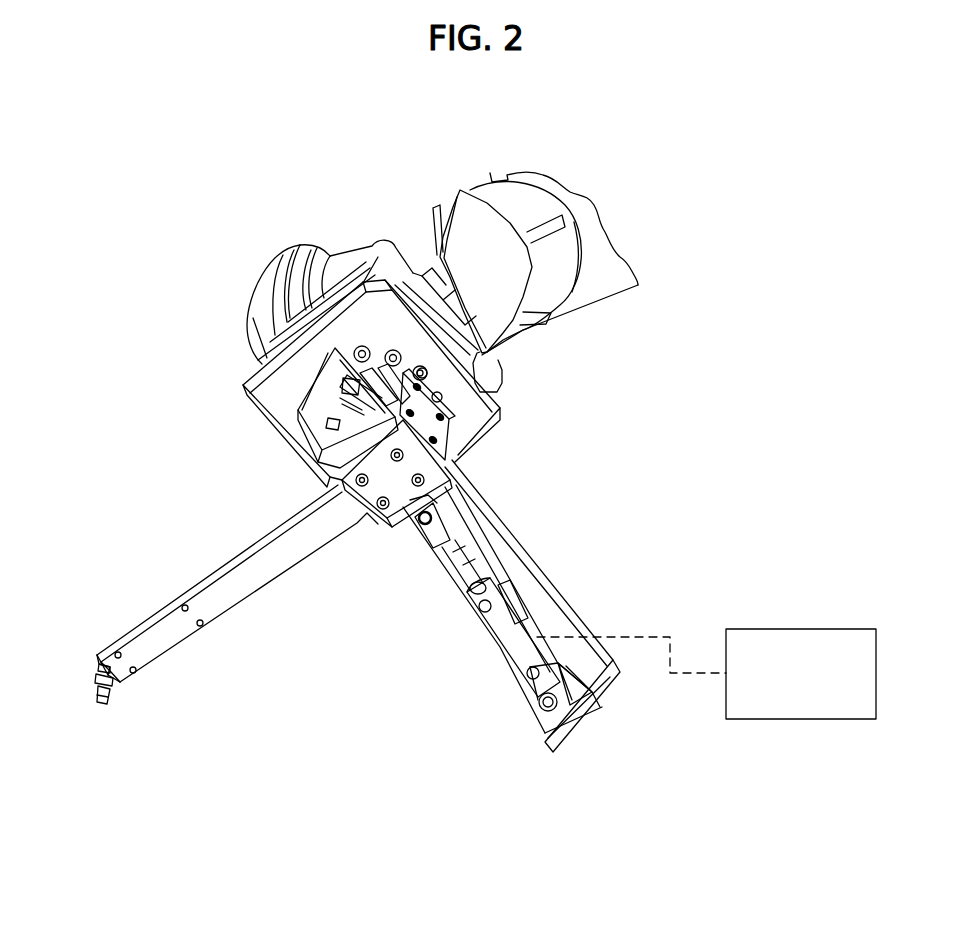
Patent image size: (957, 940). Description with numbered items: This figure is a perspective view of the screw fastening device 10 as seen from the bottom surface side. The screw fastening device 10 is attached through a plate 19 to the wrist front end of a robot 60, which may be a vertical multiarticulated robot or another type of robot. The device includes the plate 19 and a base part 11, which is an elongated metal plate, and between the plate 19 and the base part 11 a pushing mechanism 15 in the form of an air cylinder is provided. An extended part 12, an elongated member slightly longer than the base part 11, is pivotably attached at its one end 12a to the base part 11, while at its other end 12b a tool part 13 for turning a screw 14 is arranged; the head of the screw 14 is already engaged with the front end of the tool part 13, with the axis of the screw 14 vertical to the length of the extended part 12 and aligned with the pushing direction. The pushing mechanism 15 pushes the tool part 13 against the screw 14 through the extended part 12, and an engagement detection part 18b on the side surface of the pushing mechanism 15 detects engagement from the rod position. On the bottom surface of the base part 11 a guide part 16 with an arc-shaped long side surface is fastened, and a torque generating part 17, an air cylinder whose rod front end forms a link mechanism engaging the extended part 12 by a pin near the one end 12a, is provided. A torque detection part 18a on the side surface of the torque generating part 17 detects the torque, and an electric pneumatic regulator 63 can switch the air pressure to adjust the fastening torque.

The screw fastening device 10 is at (357, 658).
The base part 11 is at (490, 550).
The extended part 12 is at (273, 573).
The one end of the extended part 12a is at (403, 500).
The other end of the extended part 12b is at (123, 675).
The tool part 13 is at (95, 655).
The screw 14 is at (99, 705).
The pushing mechanism 15 is at (457, 436).
The guide part 16 is at (440, 503).
The torque generating part 17 is at (513, 650).
The torque detection part 18a is at (520, 593).
The engagement detection part 18b is at (345, 385).
The plate 19 is at (267, 402).
The robot 60 is at (470, 232).
The electric pneumatic regulator 63 is at (805, 628).